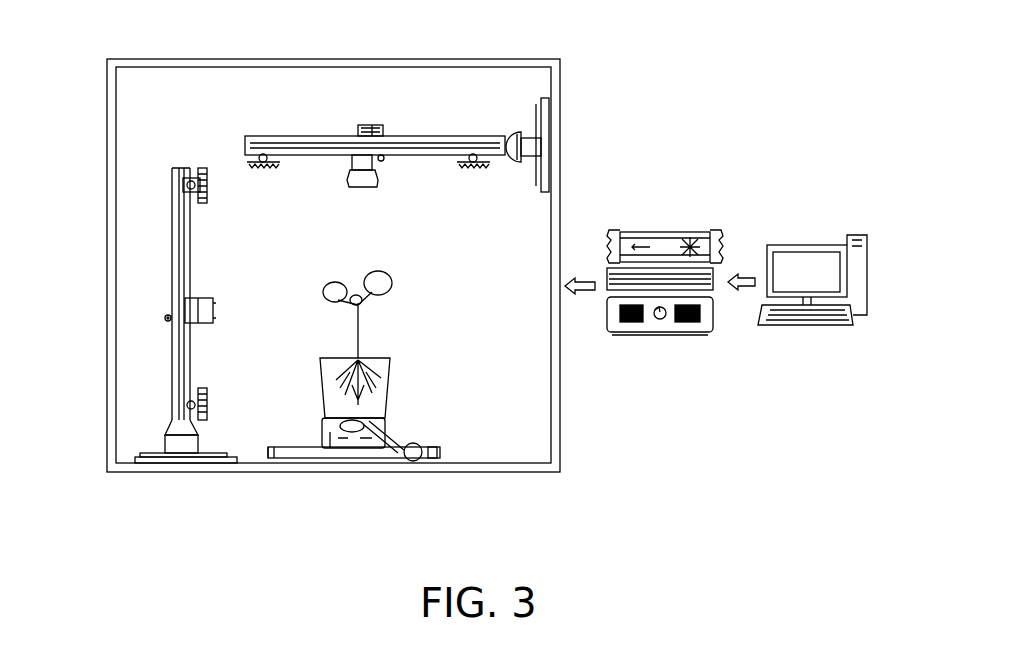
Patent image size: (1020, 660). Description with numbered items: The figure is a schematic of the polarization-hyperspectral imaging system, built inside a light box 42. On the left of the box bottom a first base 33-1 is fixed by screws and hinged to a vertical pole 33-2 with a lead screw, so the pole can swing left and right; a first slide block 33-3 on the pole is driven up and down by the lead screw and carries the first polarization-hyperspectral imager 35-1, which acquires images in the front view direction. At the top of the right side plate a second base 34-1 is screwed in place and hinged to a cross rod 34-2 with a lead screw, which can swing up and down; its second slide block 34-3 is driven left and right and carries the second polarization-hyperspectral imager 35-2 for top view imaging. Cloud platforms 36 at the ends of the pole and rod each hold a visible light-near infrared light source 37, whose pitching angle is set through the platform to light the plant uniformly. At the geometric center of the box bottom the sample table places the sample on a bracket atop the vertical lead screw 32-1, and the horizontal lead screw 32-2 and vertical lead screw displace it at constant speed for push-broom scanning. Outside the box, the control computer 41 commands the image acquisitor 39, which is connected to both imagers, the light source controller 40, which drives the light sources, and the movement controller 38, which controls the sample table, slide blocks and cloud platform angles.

The vertical lead screw 32-1 is at (435, 455).
The horizontal lead screw 32-2 is at (355, 450).
The first base 33-1 is at (177, 435).
The vertical pole 33-2 is at (177, 380).
The first slide block 33-3 is at (165, 317).
The second base 34-1 is at (523, 143).
The cross rod 34-2 is at (430, 143).
The second slide block 34-3 is at (380, 122).
The first polarization-hyperspectral imager 35-1 is at (205, 297).
The second polarization-hyperspectral imager 35-2 is at (358, 167).
The cloud platform 36 is at (195, 183).
The visible light-near infrared light source 37 is at (197, 170).
The movement controller 38 is at (630, 230).
The image acquisitor 39 is at (665, 268).
The light source controller 40 is at (668, 322).
The control computer 41 is at (828, 325).
The light box 42 is at (560, 352).